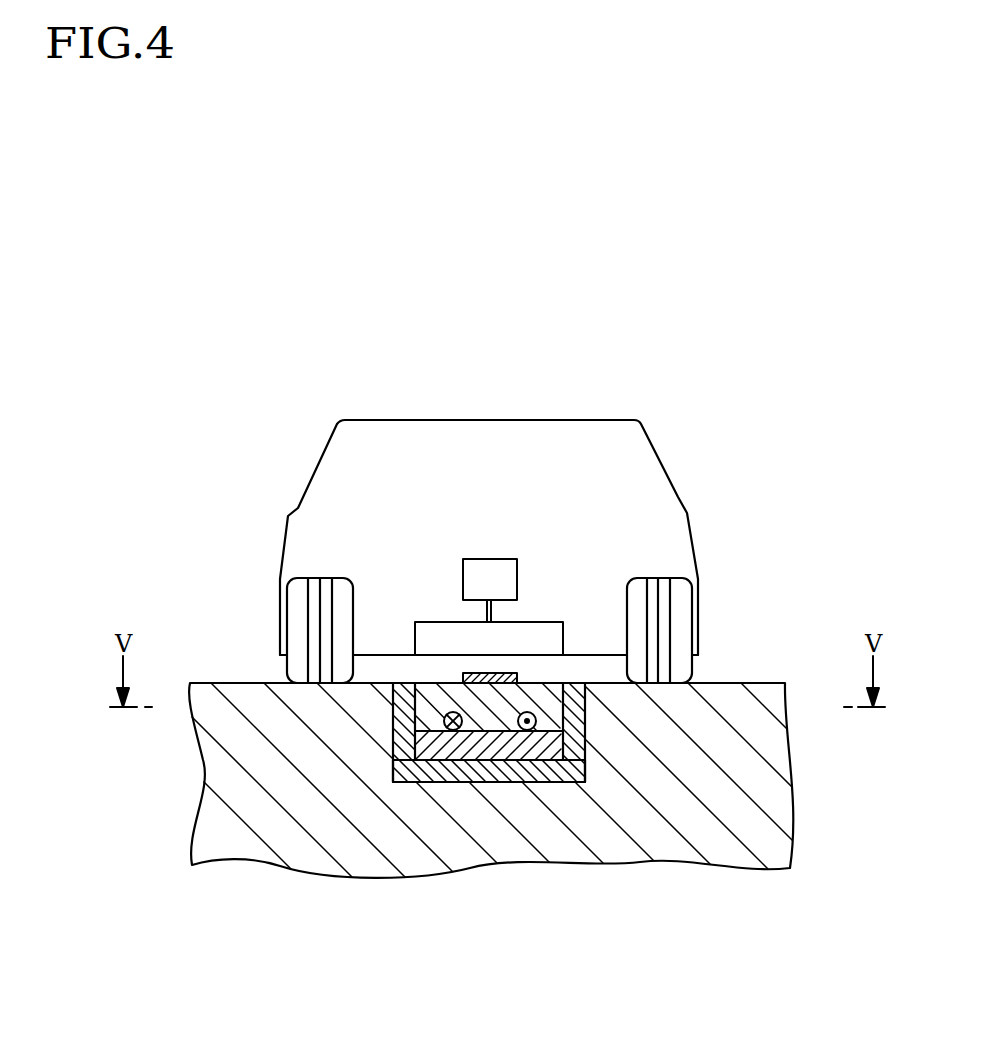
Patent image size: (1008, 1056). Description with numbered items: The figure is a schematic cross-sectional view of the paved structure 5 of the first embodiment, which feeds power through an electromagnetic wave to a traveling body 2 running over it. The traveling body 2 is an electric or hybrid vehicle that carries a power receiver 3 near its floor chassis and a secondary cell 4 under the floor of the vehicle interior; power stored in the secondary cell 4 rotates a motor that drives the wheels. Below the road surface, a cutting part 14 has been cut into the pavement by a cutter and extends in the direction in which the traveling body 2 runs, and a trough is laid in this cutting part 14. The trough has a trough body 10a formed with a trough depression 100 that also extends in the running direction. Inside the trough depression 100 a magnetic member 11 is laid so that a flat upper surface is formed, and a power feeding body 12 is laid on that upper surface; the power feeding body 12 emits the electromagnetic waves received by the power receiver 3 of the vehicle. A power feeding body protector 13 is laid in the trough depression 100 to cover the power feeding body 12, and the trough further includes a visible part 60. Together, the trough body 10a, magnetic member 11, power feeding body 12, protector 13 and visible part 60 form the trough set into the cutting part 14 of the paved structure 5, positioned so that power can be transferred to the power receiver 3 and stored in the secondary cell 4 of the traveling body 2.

The traveling body 2 is at (662, 456).
The power receiver 3 is at (440, 633).
The secondary cell 4 is at (477, 567).
The paved structure 5 is at (768, 742).
The trough body 10a is at (400, 765).
The magnetic member 11 is at (430, 753).
The power feeding body 12 is at (453, 731).
The power feeding body protector 13 is at (558, 690).
The cutting part 14 is at (562, 778).
The visible part 60 is at (513, 672).
The trough depression 100 is at (497, 755).